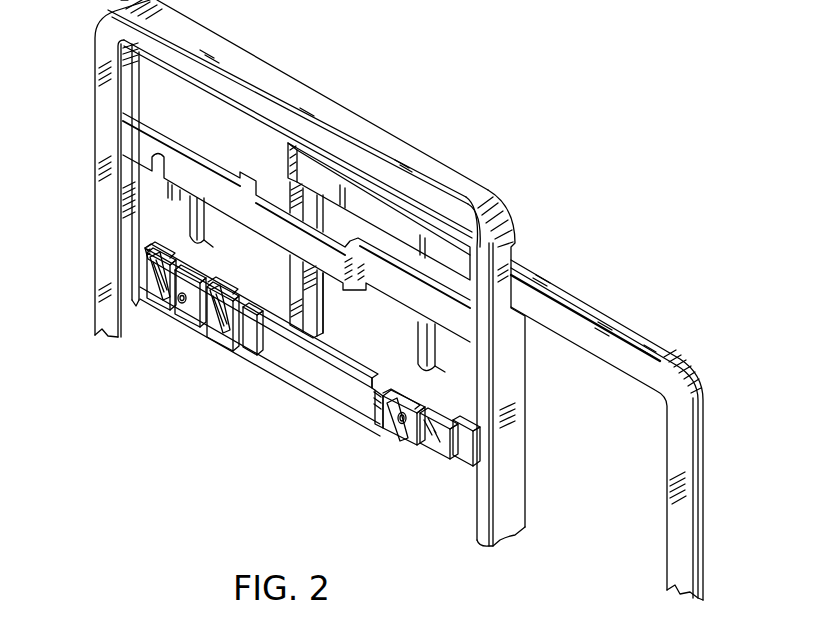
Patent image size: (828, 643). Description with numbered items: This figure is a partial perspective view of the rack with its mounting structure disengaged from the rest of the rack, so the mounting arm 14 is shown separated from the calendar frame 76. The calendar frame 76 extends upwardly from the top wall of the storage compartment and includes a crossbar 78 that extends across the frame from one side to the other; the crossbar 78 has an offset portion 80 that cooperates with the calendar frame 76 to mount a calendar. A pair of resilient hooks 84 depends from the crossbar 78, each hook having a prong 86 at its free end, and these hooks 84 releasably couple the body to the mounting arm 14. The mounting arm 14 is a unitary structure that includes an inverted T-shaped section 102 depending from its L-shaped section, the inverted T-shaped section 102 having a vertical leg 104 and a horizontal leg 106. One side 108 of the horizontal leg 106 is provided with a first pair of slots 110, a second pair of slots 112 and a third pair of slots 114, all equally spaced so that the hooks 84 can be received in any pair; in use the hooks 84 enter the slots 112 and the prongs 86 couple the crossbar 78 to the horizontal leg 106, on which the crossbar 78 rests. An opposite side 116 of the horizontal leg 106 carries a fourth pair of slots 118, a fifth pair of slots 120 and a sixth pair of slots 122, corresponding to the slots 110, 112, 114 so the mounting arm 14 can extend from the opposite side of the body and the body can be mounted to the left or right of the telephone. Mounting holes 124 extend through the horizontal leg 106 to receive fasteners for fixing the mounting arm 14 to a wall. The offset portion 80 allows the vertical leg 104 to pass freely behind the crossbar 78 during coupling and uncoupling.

The mounting arm 14 is at (610, 303).
The calendar frame 76 is at (108, 103).
The crossbar 78 is at (224, 165).
The offset portion 80 is at (272, 207).
The resilient hooks 84 is at (198, 216).
The prong 86 is at (212, 243).
The inverted T-shaped section 102 is at (327, 300).
The vertical leg 104 is at (297, 295).
The horizontal leg 106 is at (300, 378).
The one side 108 is at (195, 330).
The first pair of slots 110 is at (242, 324).
The second pair of slots 112 is at (203, 322).
The third pair of slots 114 is at (133, 264).
The opposite side 116 is at (390, 459).
The fourth pair of slots 118 is at (253, 335).
The fifth pair of slots 120 is at (222, 265).
The sixth pair of slots 122 is at (178, 255).
The mounting holes 124 is at (179, 300).